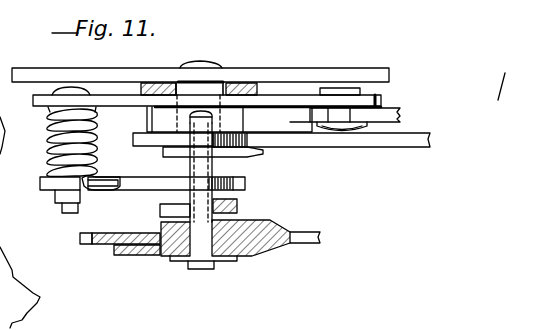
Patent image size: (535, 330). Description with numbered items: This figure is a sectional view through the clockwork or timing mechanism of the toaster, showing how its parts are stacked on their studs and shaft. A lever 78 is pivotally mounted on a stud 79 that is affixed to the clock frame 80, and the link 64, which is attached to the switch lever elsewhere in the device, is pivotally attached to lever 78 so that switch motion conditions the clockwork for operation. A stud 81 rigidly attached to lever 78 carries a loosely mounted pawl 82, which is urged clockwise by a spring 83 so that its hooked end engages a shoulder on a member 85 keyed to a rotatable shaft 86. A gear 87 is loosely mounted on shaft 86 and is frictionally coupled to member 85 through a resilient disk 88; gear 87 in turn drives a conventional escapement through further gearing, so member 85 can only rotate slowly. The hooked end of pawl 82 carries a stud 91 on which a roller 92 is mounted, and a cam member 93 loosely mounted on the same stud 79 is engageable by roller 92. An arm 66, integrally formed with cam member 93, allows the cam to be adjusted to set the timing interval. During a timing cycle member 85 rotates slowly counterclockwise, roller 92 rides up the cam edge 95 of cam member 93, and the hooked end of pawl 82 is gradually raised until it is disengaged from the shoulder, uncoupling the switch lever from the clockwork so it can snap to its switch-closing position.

The link 64 is at (400, 116).
The arm 66 is at (362, 143).
The lever 78 is at (372, 102).
The stud 79 is at (202, 62).
The clock frame 80 is at (302, 78).
The stud 81 is at (70, 214).
The pawl 82 is at (123, 179).
The spring 83 is at (50, 126).
The member 85 is at (152, 191).
The rotatable shaft 86 is at (200, 235).
The gear 87 is at (86, 246).
The resilient disk 88 is at (146, 256).
The stud 91 is at (245, 122).
The roller 92 is at (187, 131).
The cam member 93 is at (247, 152).
The cam edge 95 is at (170, 141).